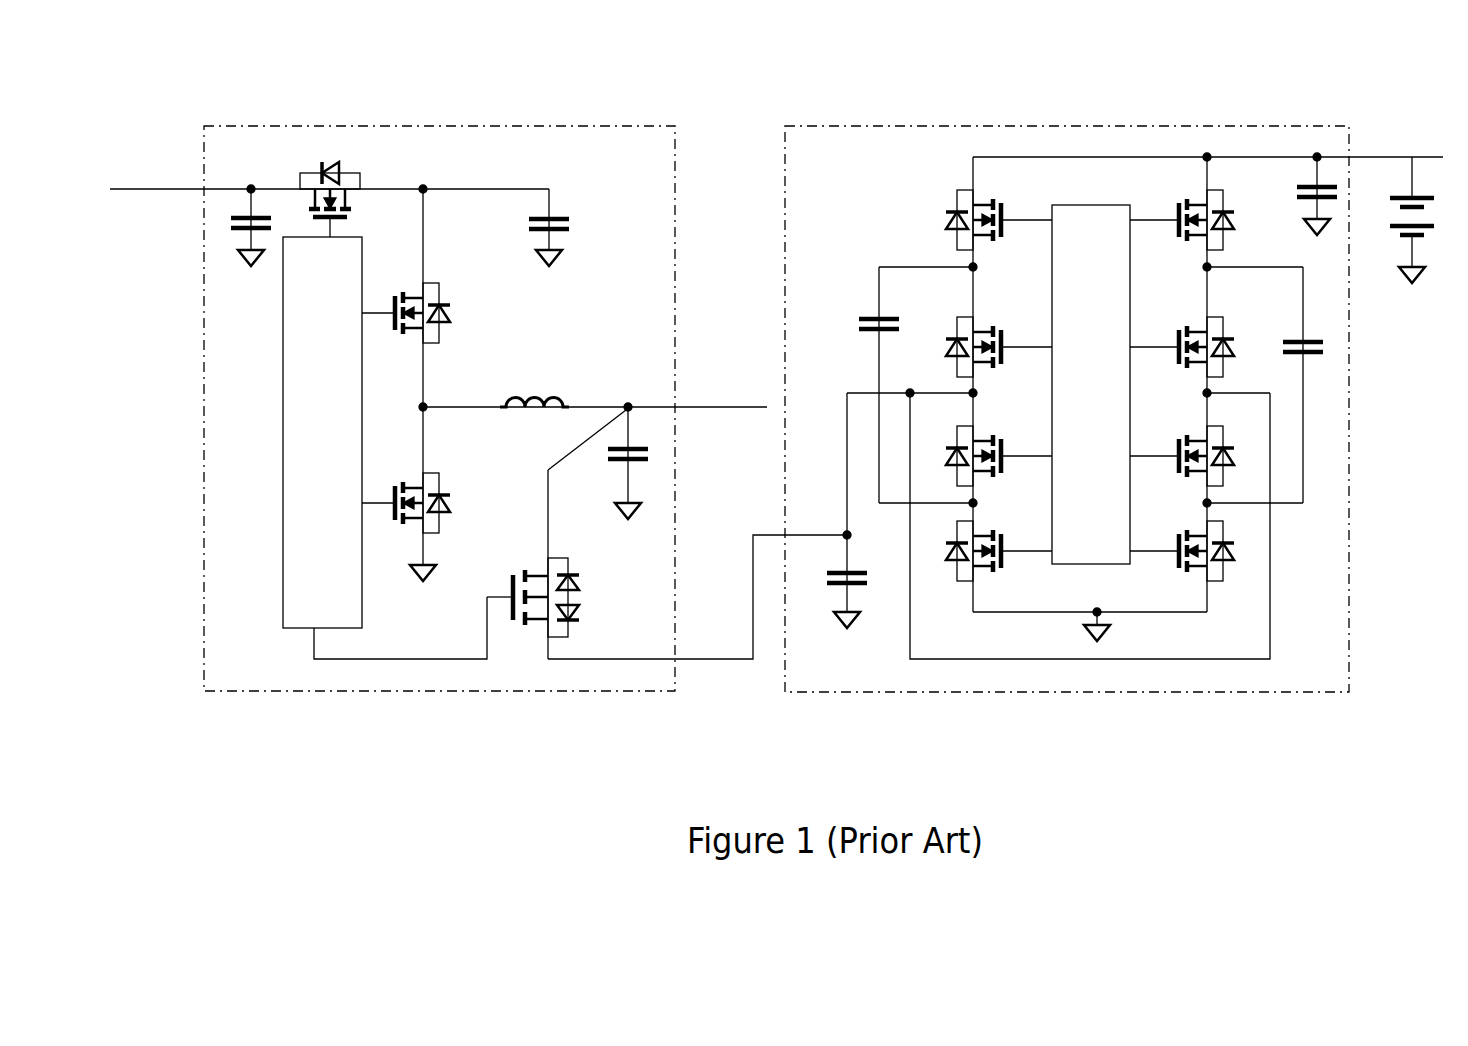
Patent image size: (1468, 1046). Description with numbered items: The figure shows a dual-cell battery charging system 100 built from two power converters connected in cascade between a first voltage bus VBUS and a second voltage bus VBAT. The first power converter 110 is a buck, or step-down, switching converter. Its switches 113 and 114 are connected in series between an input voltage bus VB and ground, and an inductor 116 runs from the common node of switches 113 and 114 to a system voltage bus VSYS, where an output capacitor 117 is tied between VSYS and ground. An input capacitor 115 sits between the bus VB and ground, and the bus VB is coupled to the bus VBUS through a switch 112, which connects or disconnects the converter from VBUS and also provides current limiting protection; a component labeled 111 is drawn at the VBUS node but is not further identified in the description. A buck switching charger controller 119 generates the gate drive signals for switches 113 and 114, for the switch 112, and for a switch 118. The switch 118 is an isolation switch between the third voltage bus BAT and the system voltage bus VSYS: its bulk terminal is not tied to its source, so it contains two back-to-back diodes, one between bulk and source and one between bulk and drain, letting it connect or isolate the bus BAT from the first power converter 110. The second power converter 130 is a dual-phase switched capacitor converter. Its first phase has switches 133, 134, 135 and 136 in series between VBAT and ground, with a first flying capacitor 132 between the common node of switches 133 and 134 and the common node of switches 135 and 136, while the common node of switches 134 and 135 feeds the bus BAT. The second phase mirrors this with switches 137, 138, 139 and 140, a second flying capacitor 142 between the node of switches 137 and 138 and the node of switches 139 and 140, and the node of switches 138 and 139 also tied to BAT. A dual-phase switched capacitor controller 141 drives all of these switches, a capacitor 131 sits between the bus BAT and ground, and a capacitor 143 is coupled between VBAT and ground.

The prior art charging system 100 is at (182, 128).
The first power converter 110 is at (400, 125).
The input capacitor 111 is at (240, 215).
The switch 112 is at (367, 182).
The switch 113 is at (453, 315).
The switch 114 is at (458, 502).
The input capacitor 115 is at (552, 213).
The inductor 116 is at (525, 397).
The output capacitor 117 is at (618, 465).
The switch 118 is at (587, 597).
The buck switching charger controller 119 is at (280, 618).
The second power converter 130 is at (975, 124).
The capacitor 131 is at (840, 588).
The first flying capacitor 132 is at (868, 315).
The switch 133 is at (1035, 187).
The switch 134 is at (1035, 312).
The switch 135 is at (1035, 415).
The switch 136 is at (1035, 520).
The switch 137 is at (1170, 212).
The switch 138 is at (1170, 337).
The switch 139 is at (1170, 443).
The switch 140 is at (1170, 548).
The dual-phase switched capacitor controller 141 is at (1102, 567).
The second flying capacitor 142 is at (1297, 338).
The capacitor 143 is at (1297, 187).